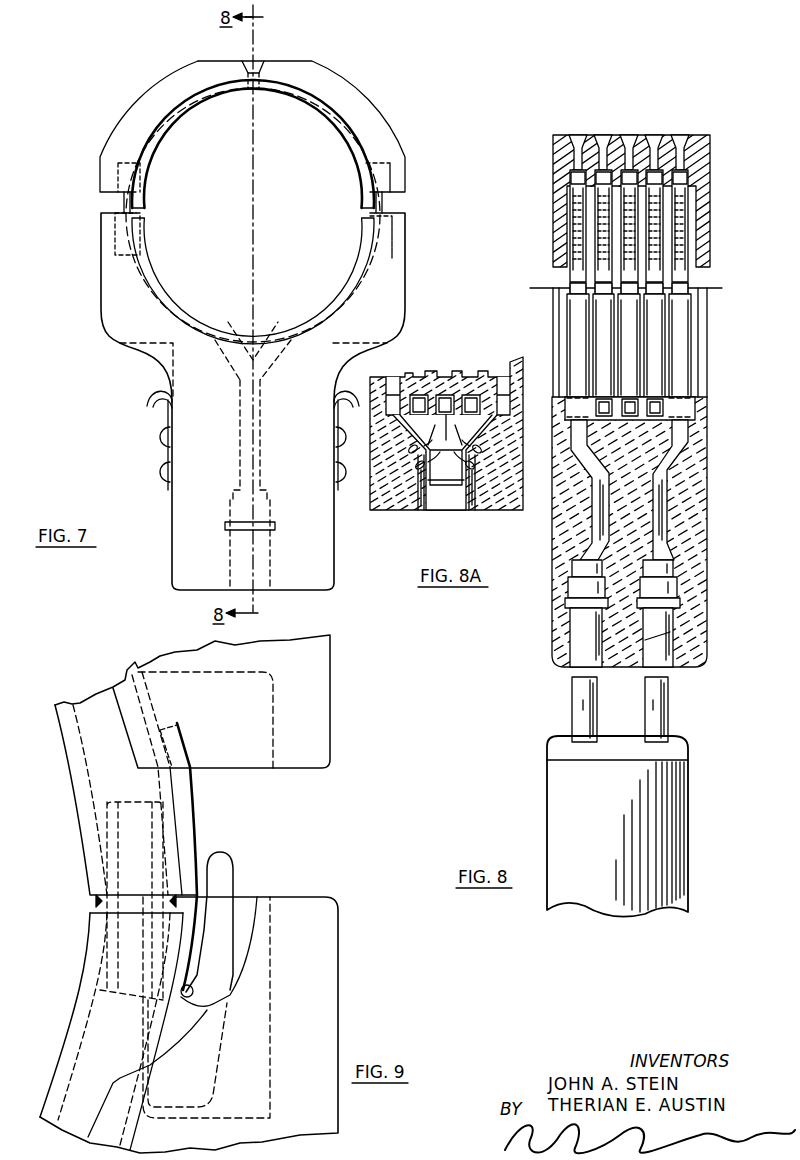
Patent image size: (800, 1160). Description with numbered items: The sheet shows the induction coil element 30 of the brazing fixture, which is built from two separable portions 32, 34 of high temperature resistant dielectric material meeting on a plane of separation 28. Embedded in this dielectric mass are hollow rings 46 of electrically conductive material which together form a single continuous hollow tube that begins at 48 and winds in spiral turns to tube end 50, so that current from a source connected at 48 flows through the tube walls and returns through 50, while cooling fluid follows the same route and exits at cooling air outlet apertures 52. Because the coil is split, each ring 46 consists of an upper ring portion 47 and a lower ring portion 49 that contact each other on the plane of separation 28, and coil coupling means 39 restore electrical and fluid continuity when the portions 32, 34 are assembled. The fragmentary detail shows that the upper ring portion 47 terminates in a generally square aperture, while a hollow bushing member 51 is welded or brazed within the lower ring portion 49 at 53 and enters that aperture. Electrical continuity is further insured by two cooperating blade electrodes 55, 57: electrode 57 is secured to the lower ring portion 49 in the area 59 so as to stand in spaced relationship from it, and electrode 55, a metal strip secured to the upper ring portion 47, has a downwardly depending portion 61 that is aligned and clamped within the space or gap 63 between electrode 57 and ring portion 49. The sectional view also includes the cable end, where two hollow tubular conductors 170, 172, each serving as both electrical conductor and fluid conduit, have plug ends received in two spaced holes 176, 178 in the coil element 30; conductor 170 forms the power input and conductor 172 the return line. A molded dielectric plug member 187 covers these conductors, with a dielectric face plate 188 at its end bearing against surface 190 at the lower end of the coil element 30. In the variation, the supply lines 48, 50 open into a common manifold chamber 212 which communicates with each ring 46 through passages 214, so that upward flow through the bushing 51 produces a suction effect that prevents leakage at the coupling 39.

In FIG. 8, the plane of separation 28 is at (712, 289).
In FIG. 7, the coil element 30 is at (173, 65).
In FIG. 7, the upper portion of coil element 32 is at (368, 113).
In FIG. 8, the upper portion of coil element 32 is at (704, 140).
In FIG. 9, the upper portion of coil element 32 is at (334, 714).
In FIG. 7, the lower portion of coil element 34 is at (308, 537).
In FIG. 8A, the lower portion of coil element 34 is at (512, 398).
In FIG. 8, the lower portion of coil element 34 is at (696, 468).
In FIG. 9, the lower portion of coil element 34 is at (330, 994).
In FIG. 7, the coil coupling means 39 is at (393, 202).
In FIG. 9, the coil coupling means 39 is at (262, 828).
In FIG. 7, the hollow ring 46 is at (253, 212).
In FIG. 8A, the hollow ring 46 is at (398, 380).
In FIG. 8, the hollow ring 46 is at (574, 214).
In FIG. 7, the upper ring portion 47 is at (140, 195).
In FIG. 9, the upper ring portion 47 is at (90, 802).
In FIG. 8A, the tube beginning / cooling fluid supply line 48 is at (418, 495).
In FIG. 8, the tube beginning / cooling fluid supply line 48 is at (592, 541).
In FIG. 7, the lower ring portion 49 is at (142, 250).
In FIG. 9, the lower ring portion 49 is at (60, 1064).
In FIG. 8A, the tube end / cooling fluid supply line 50 is at (470, 500).
In FIG. 8, the tube end / cooling fluid supply line 50 is at (657, 557).
In FIG. 9, the hollow bushing member 51 is at (118, 958).
In FIG. 7, the cooling air outlet aperture 52 is at (254, 63).
In FIG. 8, the cooling air outlet aperture 52 is at (630, 140).
In FIG. 9, the securing location of bushing 53 is at (100, 903).
In FIG. 9, the blade electrode 55 is at (190, 830).
In FIG. 9, the blade electrode 57 is at (228, 873).
In FIG. 9, the securing area of electrode 59 is at (173, 1037).
In FIG. 9, the downwardly depending portion 61 is at (190, 966).
In FIG. 9, the space or gap 63 is at (208, 1006).
In FIG. 8, the hollow tubular conductor 170 is at (658, 721).
In FIG. 8, the hollow tubular conductor 172 is at (578, 721).
In FIG. 8, the hole in coil element 176 is at (578, 668).
In FIG. 8, the hole in coil element 178 is at (668, 668).
In FIG. 8, the plug member 187 is at (644, 826).
In FIG. 8, the dielectric face plate 188 is at (668, 751).
In FIG. 8, the surface at lower end of coil element 190 is at (629, 668).
In FIG. 8A, the manifold or chamber 212 is at (450, 470).
In FIG. 8A, the passage 214 is at (412, 447).